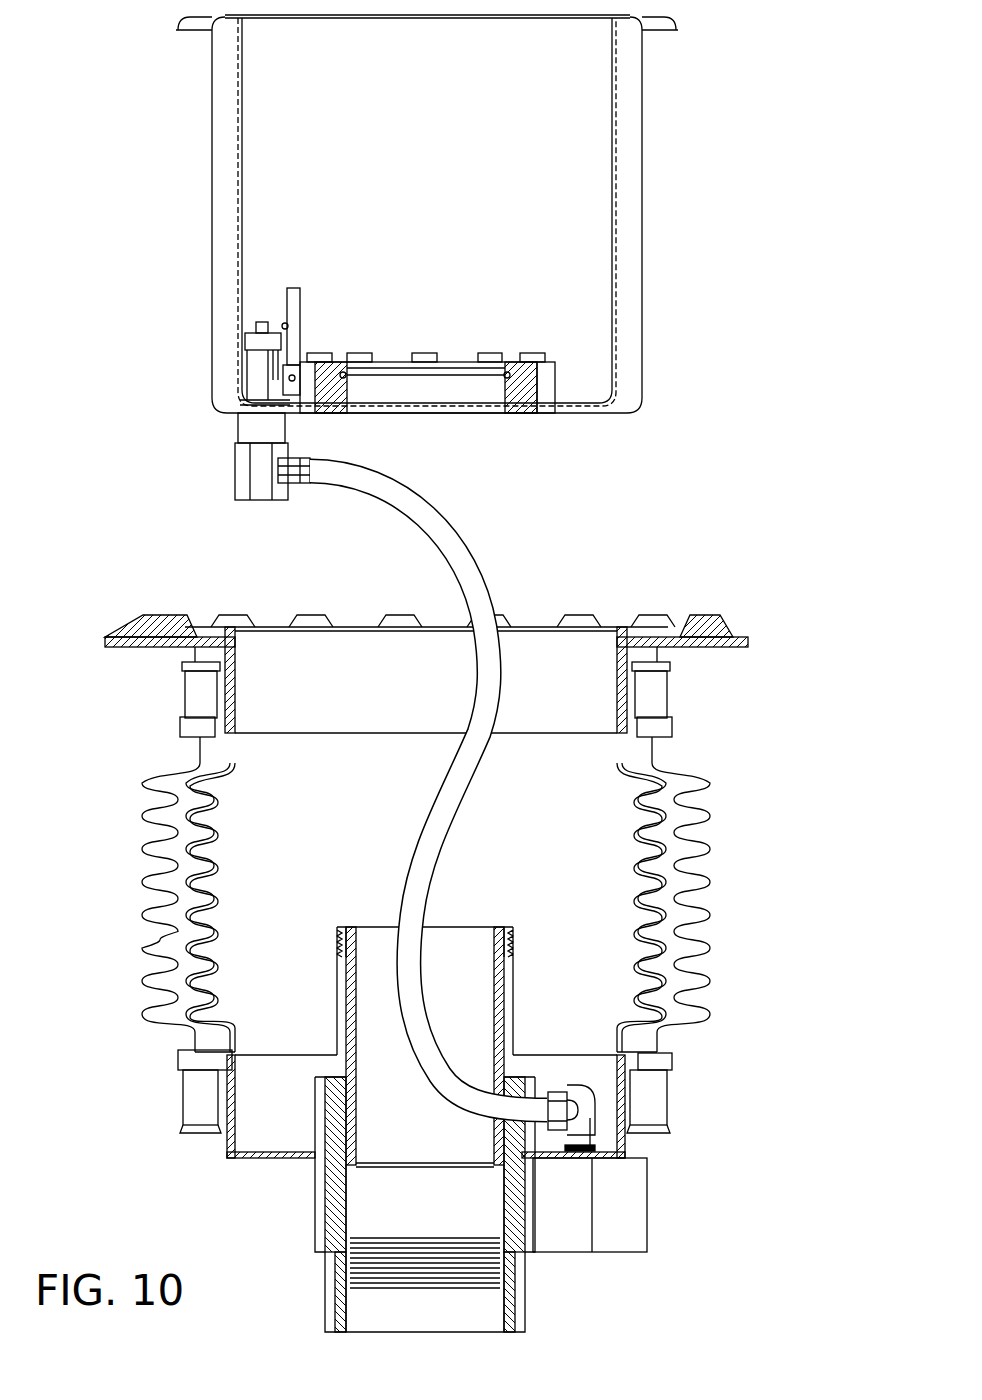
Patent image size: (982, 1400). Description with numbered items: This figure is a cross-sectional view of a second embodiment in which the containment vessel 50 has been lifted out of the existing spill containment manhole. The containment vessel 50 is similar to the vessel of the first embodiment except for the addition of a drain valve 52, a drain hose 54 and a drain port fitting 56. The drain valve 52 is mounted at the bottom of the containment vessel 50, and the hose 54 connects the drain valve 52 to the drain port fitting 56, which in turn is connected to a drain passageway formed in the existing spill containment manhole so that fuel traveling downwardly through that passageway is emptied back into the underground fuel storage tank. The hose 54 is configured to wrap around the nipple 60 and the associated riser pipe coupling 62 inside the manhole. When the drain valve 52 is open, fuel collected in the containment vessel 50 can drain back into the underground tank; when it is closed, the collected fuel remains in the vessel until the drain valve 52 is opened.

The containment vessel 50 is at (676, 200).
The drain valve 52 is at (322, 312).
The drain hose 54 is at (463, 546).
The drain port fitting 56 is at (573, 1086).
The nipple 60 is at (505, 973).
The riser pipe coupling 62 is at (520, 1303).